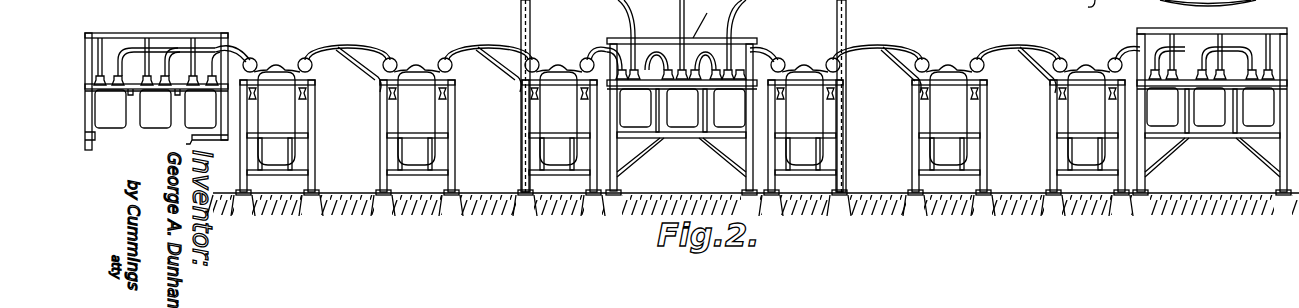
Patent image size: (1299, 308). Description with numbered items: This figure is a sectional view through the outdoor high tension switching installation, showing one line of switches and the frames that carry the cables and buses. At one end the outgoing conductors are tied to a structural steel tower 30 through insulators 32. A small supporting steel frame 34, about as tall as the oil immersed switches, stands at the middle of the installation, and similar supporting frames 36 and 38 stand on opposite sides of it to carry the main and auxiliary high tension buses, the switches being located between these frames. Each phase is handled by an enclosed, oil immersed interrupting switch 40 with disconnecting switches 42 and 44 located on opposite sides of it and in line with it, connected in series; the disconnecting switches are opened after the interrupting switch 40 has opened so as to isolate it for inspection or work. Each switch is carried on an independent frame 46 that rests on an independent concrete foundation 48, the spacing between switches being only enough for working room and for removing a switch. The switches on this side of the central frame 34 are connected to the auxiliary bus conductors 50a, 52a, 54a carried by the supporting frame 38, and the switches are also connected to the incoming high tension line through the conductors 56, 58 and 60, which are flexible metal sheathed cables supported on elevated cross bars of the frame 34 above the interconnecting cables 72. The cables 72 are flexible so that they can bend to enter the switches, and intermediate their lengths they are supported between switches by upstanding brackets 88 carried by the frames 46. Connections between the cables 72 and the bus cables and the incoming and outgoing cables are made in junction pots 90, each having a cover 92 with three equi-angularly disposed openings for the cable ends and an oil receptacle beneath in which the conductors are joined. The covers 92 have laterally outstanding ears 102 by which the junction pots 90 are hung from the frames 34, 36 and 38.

The steel tower 30 is at (196, 32).
The insulators 32 is at (148, 32).
The supporting steel frame 34 is at (101, 32).
The supporting frame 36 is at (227, 33).
The supporting frame 38 is at (1142, 33).
The interrupting switch 40 is at (407, 108).
The disconnecting switch 42 is at (280, 125).
The disconnecting switch 44 is at (547, 108).
The frame 46 is at (313, 172).
The concrete foundation 48 is at (303, 207).
The bus conductor 50a is at (1172, 25).
The bus conductor 52a is at (1222, 25).
The bus conductor 54a is at (1268, 25).
The incoming high tension conductor 56 is at (732, 33).
The incoming high tension conductor 58 is at (683, 35).
The incoming high tension conductor 60 is at (630, 32).
The interconnecting cable 72 is at (473, 43).
The upstanding bracket 88 is at (1033, 65).
The junction pot 90 is at (684, 108).
The cover 92 is at (218, 80).
The laterally outstanding ears 102 is at (230, 78).